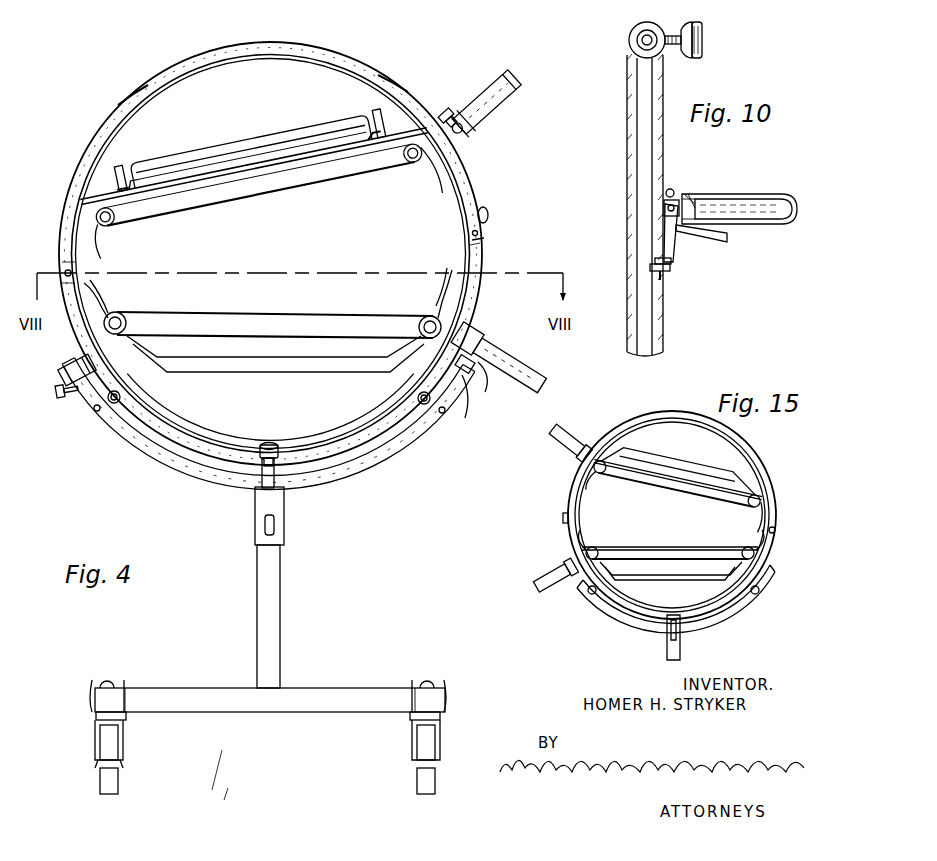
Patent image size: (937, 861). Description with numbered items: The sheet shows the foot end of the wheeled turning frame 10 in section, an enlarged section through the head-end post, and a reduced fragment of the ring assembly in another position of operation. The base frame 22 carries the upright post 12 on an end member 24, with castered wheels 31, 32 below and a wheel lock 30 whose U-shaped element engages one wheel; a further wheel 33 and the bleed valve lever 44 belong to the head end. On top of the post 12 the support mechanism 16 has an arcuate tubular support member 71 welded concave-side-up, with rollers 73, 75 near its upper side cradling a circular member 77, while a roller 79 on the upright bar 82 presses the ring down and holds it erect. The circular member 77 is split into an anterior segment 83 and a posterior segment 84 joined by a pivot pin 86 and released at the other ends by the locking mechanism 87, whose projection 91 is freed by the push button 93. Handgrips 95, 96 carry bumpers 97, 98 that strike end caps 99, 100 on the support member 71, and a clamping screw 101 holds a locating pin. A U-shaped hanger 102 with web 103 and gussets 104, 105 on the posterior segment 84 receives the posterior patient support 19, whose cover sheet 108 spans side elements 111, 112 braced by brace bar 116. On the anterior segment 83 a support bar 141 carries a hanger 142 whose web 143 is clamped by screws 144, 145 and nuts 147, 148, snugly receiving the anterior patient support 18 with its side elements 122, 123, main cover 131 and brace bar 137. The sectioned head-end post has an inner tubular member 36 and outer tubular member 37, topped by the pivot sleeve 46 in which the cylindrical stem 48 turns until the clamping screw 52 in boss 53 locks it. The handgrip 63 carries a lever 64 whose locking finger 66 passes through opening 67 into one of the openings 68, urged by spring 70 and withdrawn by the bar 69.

In FIG. 4, the turning frame 10 is at (127, 47).
In FIG. 4, the upright post 12 is at (255, 603).
In FIG. 4, the support mechanism 16 is at (405, 79).
In FIG. 15, the support mechanism 16 is at (797, 446).
In FIG. 4, the anterior patient support 18 is at (303, 293).
In FIG. 15, the anterior patient support 18 is at (678, 545).
In FIG. 4, the posterior patient support 19 is at (255, 165).
In FIG. 15, the posterior patient support 19 is at (659, 492).
In FIG. 4, the base frame 22 is at (322, 686).
In FIG. 4, the end member 24 is at (176, 698).
In FIG. 4, the wheel lock 30 is at (87, 703).
In FIG. 4, the wheel 31 is at (80, 783).
In FIG. 4, the wheel 32 is at (427, 795).
In FIG. 10, the wheel 33 is at (762, 8).
In FIG. 10, the bleed valve lever 44 is at (790, 0).
In FIG. 10, the inner tubular member 36 is at (636, 125).
In FIG. 10, the outer tubular member 37 is at (630, 98).
In FIG. 10, the pivot sleeve 46 is at (633, 25).
In FIG. 10, the cylindrical stem 48 is at (628, 38).
In FIG. 10, the clamping screw 52 is at (704, 34).
In FIG. 10, the boss 53 is at (667, 36).
In FIG. 10, the handgrip 63 is at (775, 224).
In FIG. 10, the lever 64 is at (672, 248).
In FIG. 10, the locking finger 66 is at (653, 262).
In FIG. 10, the opening 67 is at (665, 271).
In FIG. 10, the openings 68 is at (650, 268).
In FIG. 10, the bar 69 is at (727, 242).
In FIG. 10, the spring 70 is at (671, 187).
In FIG. 4, the arcuate tubular support member 71 is at (355, 470).
In FIG. 15, the arcuate tubular support member 71 is at (740, 622).
In FIG. 4, the roller 73 is at (108, 402).
In FIG. 15, the roller 73 is at (590, 592).
In FIG. 4, the roller 75 is at (428, 404).
In FIG. 15, the roller 75 is at (767, 597).
In FIG. 4, the circular member 77 is at (135, 92).
In FIG. 15, the circular member 77 is at (636, 412).
In FIG. 4, the roller 79 is at (273, 445).
In FIG. 4, the upright bar 82 is at (283, 490).
In FIG. 4, the anterior segment 83 is at (205, 60).
In FIG. 15, the anterior segment 83 is at (642, 623).
In FIG. 4, the posterior segment 84 is at (186, 440).
In FIG. 15, the posterior segment 84 is at (665, 413).
In FIG. 4, the pivot pin 86 is at (65, 270).
In FIG. 15, the pivot pin 86 is at (775, 528).
In FIG. 4, the locking mechanism 87 is at (484, 228).
In FIG. 15, the locking mechanism 87 is at (557, 518).
In FIG. 4, the projection 91 is at (480, 242).
In FIG. 4, the push button 93 is at (484, 208).
In FIG. 4, the handgrip 95 is at (488, 95).
In FIG. 15, the handgrip 95 is at (545, 585).
In FIG. 4, the handgrip 96 is at (526, 393).
In FIG. 15, the handgrip 96 is at (560, 444).
In FIG. 4, the bumper 97 is at (447, 110).
In FIG. 4, the bumper 98 is at (480, 370).
In FIG. 4, the end cap 99 is at (68, 360).
In FIG. 4, the end cap 100 is at (470, 395).
In FIG. 4, the clamping screw 101 is at (55, 393).
In FIG. 4, the hanger 102 is at (292, 330).
In FIG. 4, the web 103 is at (228, 343).
In FIG. 4, the gusset 104 is at (96, 300).
In FIG. 4, the gusset 105 is at (455, 308).
In FIG. 4, the cover sheet 108 is at (280, 287).
In FIG. 4, the side element 111 is at (128, 318).
In FIG. 4, the side element 112 is at (421, 318).
In FIG. 4, the brace bar 116 is at (313, 377).
In FIG. 4, the side element 122 is at (123, 237).
In FIG. 4, the side element 123 is at (395, 190).
In FIG. 4, the main cover 131 is at (264, 213).
In FIG. 4, the brace bar 137 is at (244, 120).
In FIG. 4, the support bar 141 is at (244, 115).
In FIG. 4, the hanger 142 is at (243, 112).
In FIG. 4, the web 143 is at (261, 200).
In FIG. 4, the screw 144 is at (141, 148).
In FIG. 4, the screw 145 is at (350, 116).
In FIG. 4, the nut 147 is at (163, 157).
In FIG. 4, the nut 148 is at (345, 167).